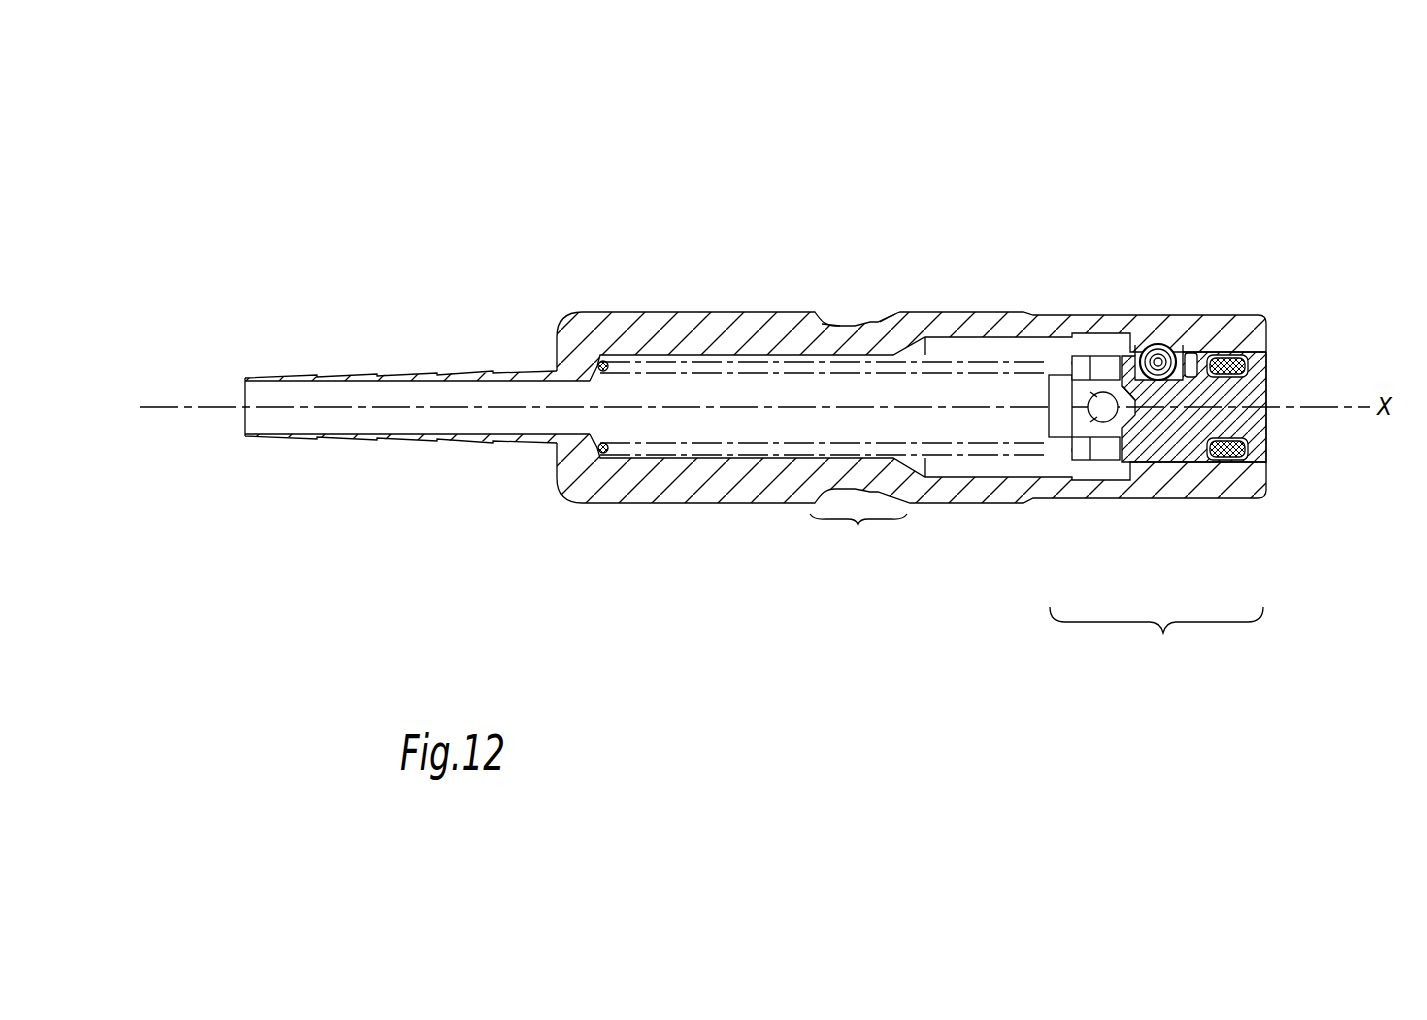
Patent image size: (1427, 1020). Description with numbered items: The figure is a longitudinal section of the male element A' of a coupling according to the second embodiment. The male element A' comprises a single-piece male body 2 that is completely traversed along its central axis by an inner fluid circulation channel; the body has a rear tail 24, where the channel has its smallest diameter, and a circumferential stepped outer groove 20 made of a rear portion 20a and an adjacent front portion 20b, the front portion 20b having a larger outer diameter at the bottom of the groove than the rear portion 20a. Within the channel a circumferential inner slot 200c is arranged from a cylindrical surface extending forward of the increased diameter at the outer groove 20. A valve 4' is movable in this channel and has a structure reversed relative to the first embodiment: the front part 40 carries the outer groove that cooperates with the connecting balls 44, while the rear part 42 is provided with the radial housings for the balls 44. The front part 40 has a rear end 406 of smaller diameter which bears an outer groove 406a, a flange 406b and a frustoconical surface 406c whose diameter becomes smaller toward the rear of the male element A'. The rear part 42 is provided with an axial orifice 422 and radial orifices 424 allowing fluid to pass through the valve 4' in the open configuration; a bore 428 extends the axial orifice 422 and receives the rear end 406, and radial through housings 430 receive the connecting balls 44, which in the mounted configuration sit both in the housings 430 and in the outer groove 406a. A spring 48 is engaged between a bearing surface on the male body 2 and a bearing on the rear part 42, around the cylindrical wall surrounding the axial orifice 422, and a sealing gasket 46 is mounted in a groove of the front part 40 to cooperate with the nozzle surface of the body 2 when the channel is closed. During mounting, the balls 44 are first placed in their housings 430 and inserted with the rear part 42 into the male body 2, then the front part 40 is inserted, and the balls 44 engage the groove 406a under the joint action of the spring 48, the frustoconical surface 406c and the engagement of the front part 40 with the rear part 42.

The male body 2 is at (638, 493).
The rear tail 24 is at (357, 378).
The spring 48 is at (650, 365).
The outer groove 20 is at (858, 535).
The rear portion 20a is at (833, 318).
The front portion 20b is at (892, 318).
The front part 40 is at (1267, 390).
The rear part 42 is at (1084, 390).
The connecting balls 44 is at (1163, 345).
The sealing gasket 46 is at (1267, 338).
The rear end 406 is at (1267, 425).
The outer groove 406a is at (1186, 352).
The flange 406b is at (1150, 345).
The frustoconical surface 406c is at (1119, 382).
The radial through housings 430 is at (1197, 347).
The axial orifice 422 is at (1047, 398).
The radial orifices 424 is at (1084, 390).
The bore 428 is at (1112, 468).
The circumferential inner slot 200c is at (1093, 454).
The valve 4' is at (1156, 636).
The male element A' is at (550, 142).